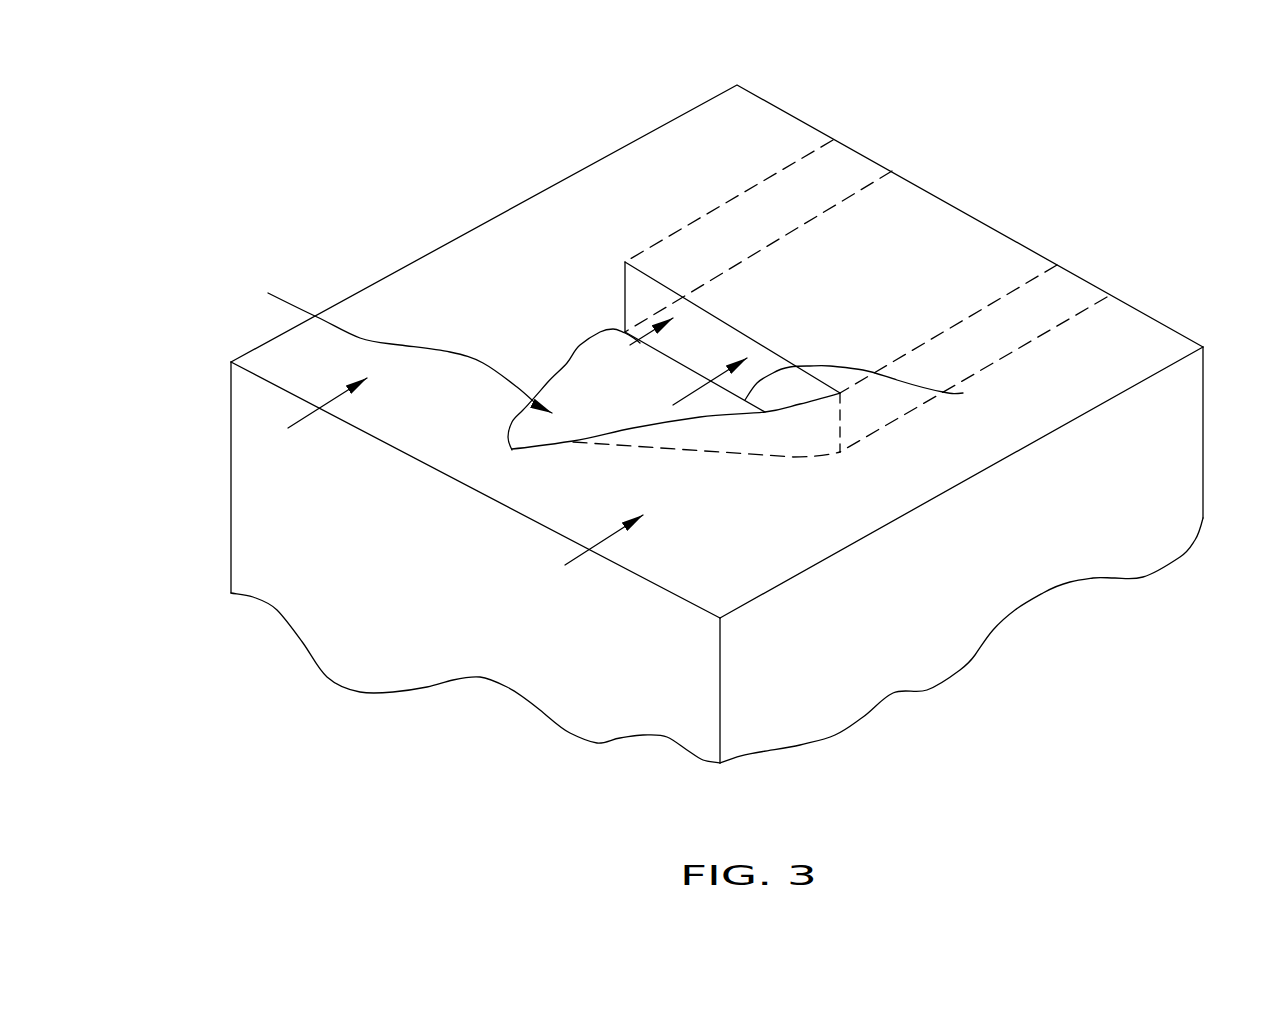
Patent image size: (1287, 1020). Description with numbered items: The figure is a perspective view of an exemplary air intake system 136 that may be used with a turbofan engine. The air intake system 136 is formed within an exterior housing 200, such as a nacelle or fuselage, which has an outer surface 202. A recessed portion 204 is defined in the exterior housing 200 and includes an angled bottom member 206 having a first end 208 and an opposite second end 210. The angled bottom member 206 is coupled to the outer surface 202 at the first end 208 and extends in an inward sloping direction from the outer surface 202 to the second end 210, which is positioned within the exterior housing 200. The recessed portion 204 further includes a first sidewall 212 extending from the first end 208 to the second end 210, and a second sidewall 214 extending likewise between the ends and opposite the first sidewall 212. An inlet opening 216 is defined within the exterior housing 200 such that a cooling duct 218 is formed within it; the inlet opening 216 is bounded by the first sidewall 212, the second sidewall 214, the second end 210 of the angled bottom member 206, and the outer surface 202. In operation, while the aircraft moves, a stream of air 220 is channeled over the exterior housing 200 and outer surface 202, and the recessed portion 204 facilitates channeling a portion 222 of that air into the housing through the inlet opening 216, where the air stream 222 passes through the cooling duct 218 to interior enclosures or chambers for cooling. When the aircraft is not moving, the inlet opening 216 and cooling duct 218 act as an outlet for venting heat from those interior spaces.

The air intake system 136 is at (1000, 145).
The exterior housing 200 is at (648, 132).
The outer surface 202 is at (375, 312).
The recessed portion 204 is at (386, 340).
The angled bottom member 206 is at (636, 412).
The first end 208 is at (512, 450).
The second end 210 is at (963, 393).
The first sidewall 212 is at (617, 307).
The second sidewall 214 is at (762, 443).
The inlet opening 216 is at (563, 365).
The cooling duct 218 is at (903, 285).
The stream of air 220 is at (328, 404).
The portion of air 222 is at (695, 392).